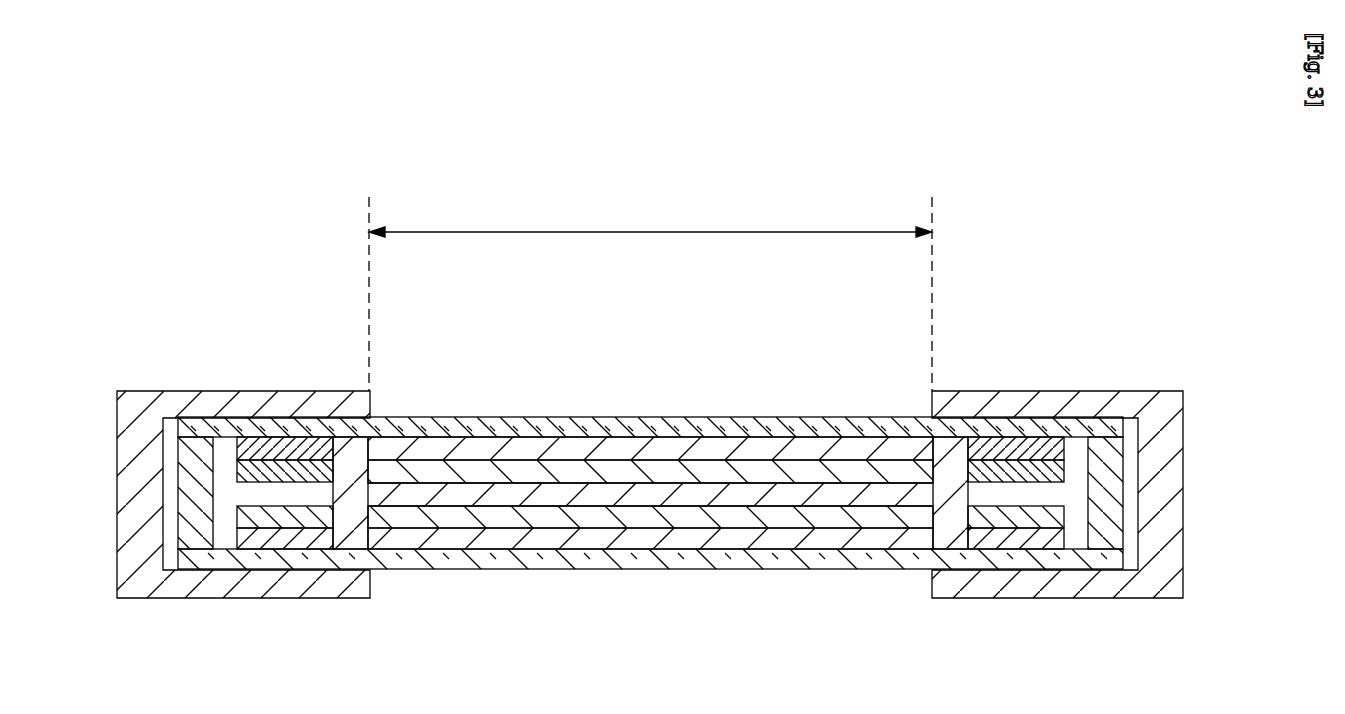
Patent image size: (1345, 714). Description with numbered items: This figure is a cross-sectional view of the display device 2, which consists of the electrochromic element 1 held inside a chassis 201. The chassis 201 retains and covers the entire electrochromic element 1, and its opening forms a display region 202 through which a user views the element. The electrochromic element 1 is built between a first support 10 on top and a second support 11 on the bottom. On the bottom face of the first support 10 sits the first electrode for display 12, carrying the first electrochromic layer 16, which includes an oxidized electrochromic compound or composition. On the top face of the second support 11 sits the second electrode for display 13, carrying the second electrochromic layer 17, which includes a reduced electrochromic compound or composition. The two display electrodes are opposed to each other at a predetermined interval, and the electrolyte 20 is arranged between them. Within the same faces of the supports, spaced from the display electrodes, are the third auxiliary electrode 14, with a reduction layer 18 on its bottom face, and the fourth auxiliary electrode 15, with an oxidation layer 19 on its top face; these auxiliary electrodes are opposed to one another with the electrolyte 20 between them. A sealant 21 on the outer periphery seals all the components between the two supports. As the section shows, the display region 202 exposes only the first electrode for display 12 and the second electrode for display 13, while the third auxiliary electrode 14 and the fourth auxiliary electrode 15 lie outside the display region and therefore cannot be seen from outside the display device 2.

The electrochromic element 1 is at (650, 466).
The display device 2 is at (199, 282).
The first support 10 is at (886, 428).
The second support 11 is at (886, 560).
The first electrode for display 12 is at (723, 450).
The second electrode for display 13 is at (723, 538).
The third auxiliary electrode 14 is at (258, 445).
The fourth auxiliary electrode 15 is at (262, 540).
The first electrochromic layer 16 is at (612, 473).
The second electrochromic layer 17 is at (612, 515).
The reduction layer 18 is at (313, 463).
The oxidation layer 19 is at (313, 520).
The electrolyte 20 is at (482, 497).
The sealant 21 is at (198, 457).
The chassis 201 is at (1160, 405).
The display region 202 is at (652, 232).